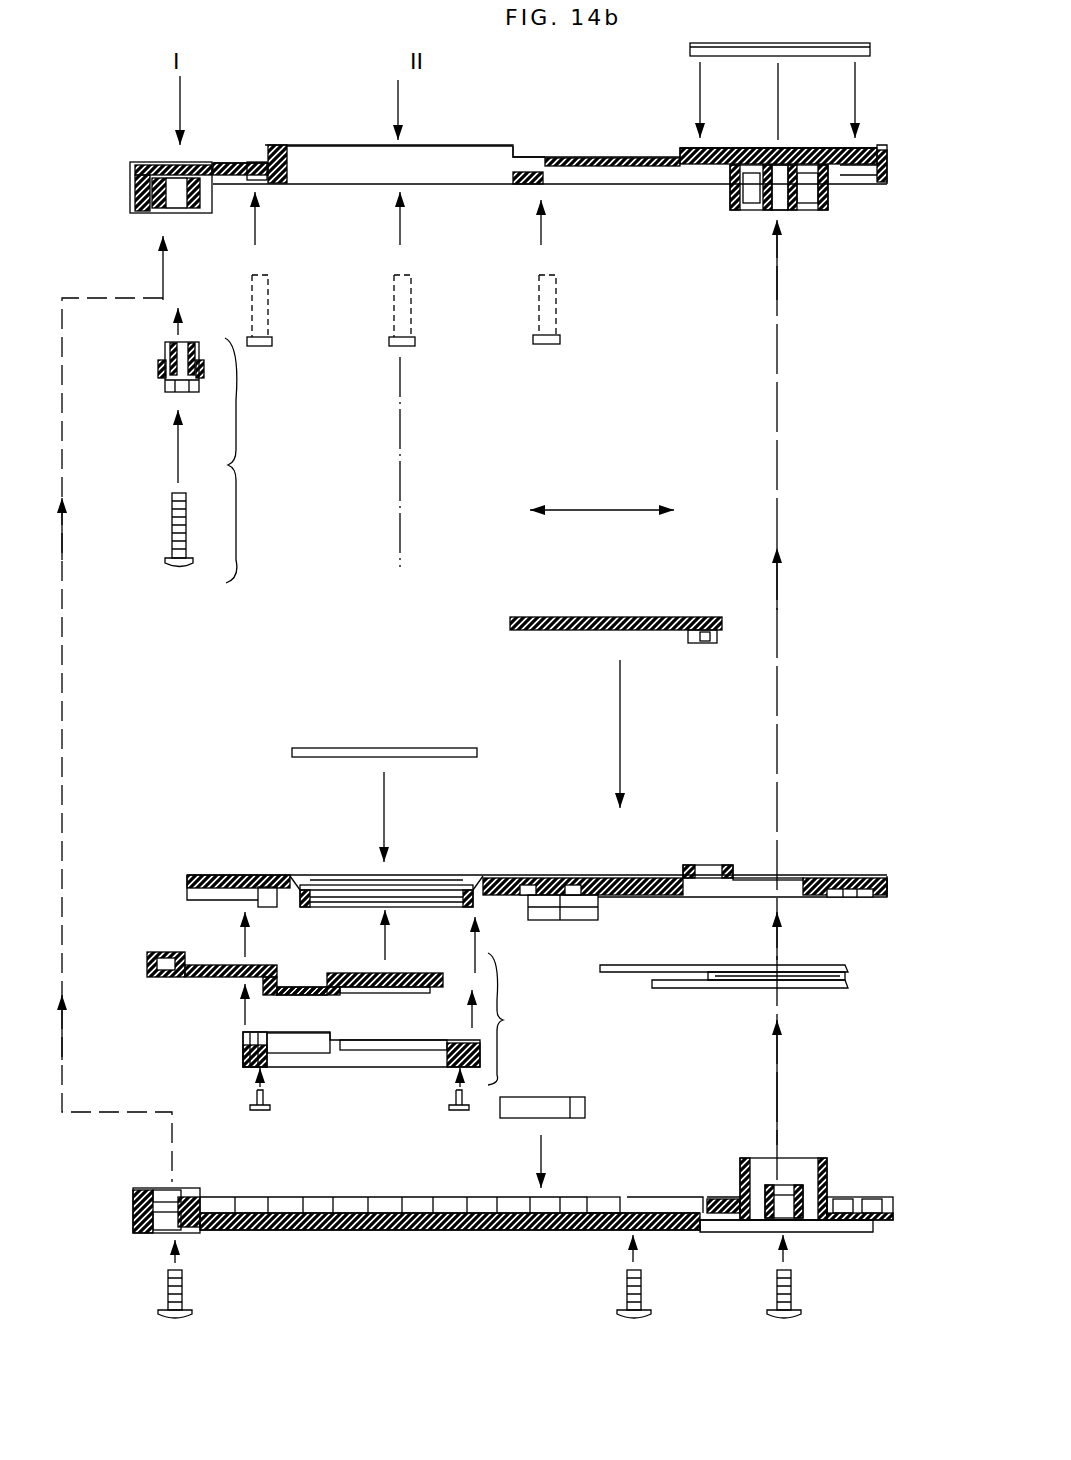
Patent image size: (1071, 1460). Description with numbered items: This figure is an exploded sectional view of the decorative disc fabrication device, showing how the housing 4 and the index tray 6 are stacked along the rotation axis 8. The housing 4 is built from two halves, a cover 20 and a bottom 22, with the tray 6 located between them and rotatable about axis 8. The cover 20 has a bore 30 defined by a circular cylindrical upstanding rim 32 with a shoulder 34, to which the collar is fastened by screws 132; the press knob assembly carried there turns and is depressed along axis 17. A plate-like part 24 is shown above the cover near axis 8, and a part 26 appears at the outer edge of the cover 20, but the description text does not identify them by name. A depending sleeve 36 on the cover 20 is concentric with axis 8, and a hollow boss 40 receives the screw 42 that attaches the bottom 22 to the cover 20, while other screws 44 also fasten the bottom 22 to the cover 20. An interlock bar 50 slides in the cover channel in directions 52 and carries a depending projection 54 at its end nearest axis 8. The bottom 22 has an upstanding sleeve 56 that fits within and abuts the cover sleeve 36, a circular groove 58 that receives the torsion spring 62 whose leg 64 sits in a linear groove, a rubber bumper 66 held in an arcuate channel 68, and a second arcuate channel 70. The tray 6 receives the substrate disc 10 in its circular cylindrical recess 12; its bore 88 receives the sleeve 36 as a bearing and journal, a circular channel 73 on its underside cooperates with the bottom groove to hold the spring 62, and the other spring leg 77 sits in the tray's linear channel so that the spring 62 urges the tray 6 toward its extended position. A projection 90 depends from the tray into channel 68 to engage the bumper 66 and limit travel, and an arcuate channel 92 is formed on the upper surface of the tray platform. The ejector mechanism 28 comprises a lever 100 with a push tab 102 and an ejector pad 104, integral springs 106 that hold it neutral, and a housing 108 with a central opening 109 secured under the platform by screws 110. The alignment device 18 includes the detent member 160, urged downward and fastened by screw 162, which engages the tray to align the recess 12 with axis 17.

The housing 4 is at (125, 178).
The index tray 6 is at (887, 897).
The axis 8 is at (778, 78).
The substrate disc 10 is at (336, 748).
The circular cylindrical recess 12 is at (447, 878).
The axis 17 is at (400, 425).
The index tray alignment device 18 is at (250, 460).
The cover 20 is at (876, 204).
The bottom 22 is at (885, 1222).
The cover plate 24 is at (872, 48).
The flange 26 is at (866, 147).
The decorative disc ejector mechanism 28 is at (511, 1019).
The bore 30 is at (513, 160).
The upstanding rim 32 is at (300, 145).
The shoulder 34 is at (252, 160).
The depending sleeve 36 is at (828, 205).
The hollow cylindrical boss 40 is at (798, 205).
The screw 42 is at (791, 1290).
The screws 44 is at (182, 1292).
The interlock bar 50 is at (680, 592).
The directions 52 is at (625, 510).
The depending projection 54 is at (700, 643).
The upstanding circular cylindrical sleeve 56 is at (827, 1185).
The circular groove 58 is at (725, 1207).
The torsion spring 62 is at (850, 985).
The leg 64 is at (677, 965).
The rubber bumper 66 is at (588, 1066).
The arcuate channel 68 is at (513, 1195).
The second arcuate channel 70 is at (247, 1205).
The circular channel 73 is at (835, 898).
The leg 77 is at (680, 988).
The circular cylindrical bore 88 is at (818, 878).
The projection 90 is at (585, 918).
The arcuate channel 92 is at (708, 865).
The lever 100 is at (222, 977).
The push tab 102 is at (170, 952).
The ejector pad 104 is at (445, 943).
The springs 106 is at (292, 1005).
The housing 108 is at (243, 1050).
The central opening 109 is at (370, 1052).
The screws 110 is at (263, 1097).
The screws 132 is at (538, 288).
The detent member 160 is at (167, 350).
The screw 162 is at (172, 540).